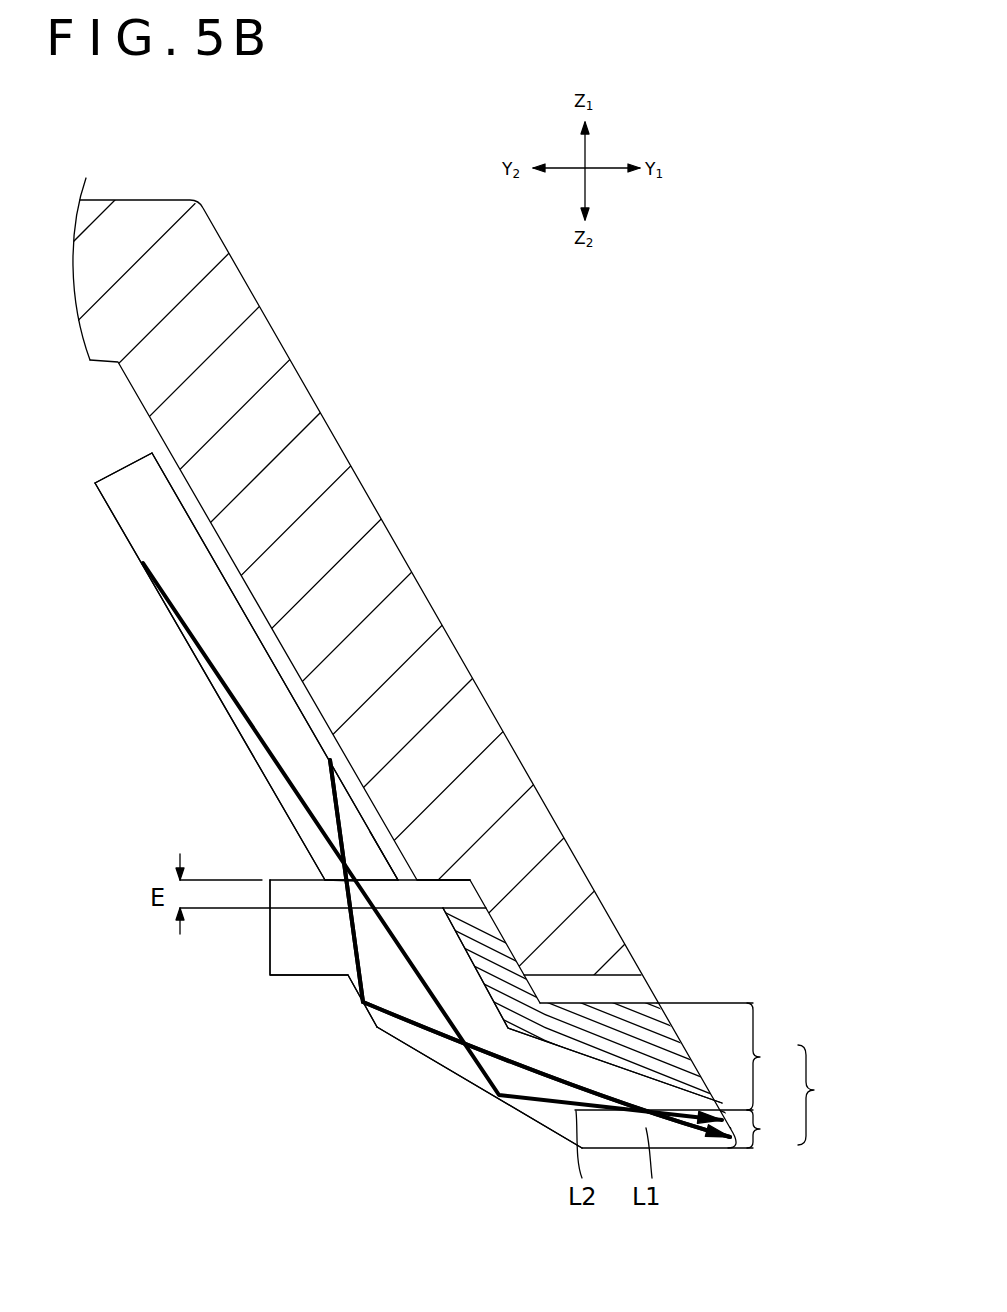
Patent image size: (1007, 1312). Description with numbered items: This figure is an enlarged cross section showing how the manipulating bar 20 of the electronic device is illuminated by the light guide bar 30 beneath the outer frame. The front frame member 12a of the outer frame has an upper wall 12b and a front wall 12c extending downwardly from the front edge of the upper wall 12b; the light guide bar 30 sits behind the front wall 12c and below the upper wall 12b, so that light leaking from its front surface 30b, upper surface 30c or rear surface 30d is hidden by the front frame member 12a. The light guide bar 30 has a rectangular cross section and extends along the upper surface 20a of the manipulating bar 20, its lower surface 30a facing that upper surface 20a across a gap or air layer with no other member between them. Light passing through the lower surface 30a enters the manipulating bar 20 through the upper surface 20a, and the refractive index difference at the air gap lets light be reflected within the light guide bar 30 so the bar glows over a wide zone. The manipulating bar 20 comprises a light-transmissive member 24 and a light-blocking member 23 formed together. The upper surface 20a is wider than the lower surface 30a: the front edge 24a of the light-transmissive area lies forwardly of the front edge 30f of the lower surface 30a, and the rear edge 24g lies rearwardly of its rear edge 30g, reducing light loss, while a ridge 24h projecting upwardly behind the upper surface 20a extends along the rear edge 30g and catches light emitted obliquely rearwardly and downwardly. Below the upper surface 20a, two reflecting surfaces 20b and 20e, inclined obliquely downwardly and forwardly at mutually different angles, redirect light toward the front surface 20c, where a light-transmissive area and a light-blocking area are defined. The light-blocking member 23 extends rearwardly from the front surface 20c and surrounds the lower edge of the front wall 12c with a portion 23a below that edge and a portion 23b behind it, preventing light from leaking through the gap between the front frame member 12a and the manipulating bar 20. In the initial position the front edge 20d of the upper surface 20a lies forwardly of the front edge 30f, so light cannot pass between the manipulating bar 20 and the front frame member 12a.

The front frame member 12a is at (372, 481).
The upper wall 12b is at (100, 276).
The front wall 12c is at (400, 540).
The manipulating bar 20 is at (400, 1060).
The upper surface 20a is at (437, 868).
The reflecting surface 20b is at (430, 1062).
The front surface 20c is at (718, 1075).
The front edge 20d is at (490, 935).
The reflecting surface 20e is at (354, 993).
The light-blocking member 23 is at (690, 863).
The portion 23a is at (633, 1015).
The portion 23b is at (497, 945).
The light-transmissive member 24 is at (374, 1028).
The front edge 24a is at (465, 880).
The rear edge 24g is at (322, 908).
The ridge 24h is at (281, 890).
The light guide bar 30 is at (236, 744).
The lower surface 30a is at (352, 926).
The front surface 30b is at (278, 658).
The upper surface 30c is at (122, 468).
The rear surface 30d is at (166, 600).
The front edge 30f is at (381, 846).
The rear edge 30g is at (320, 878).